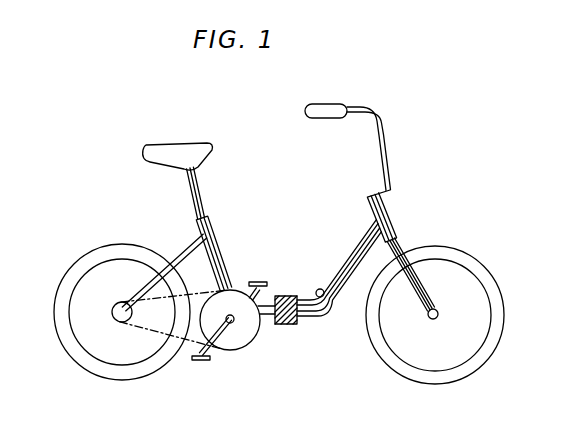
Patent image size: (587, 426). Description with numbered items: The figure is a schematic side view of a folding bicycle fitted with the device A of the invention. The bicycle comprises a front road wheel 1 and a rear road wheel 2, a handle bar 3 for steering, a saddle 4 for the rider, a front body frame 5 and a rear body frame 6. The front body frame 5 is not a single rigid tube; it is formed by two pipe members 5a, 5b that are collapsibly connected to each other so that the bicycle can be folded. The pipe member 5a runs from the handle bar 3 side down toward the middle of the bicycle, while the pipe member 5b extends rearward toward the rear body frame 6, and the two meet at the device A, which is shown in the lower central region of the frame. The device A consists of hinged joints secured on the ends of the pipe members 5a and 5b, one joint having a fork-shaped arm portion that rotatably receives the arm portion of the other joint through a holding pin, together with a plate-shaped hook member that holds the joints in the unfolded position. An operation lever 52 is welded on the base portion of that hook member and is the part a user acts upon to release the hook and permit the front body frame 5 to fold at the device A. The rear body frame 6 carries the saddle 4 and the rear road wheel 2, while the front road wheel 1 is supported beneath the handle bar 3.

The front road wheel 1 is at (481, 267).
The rear road wheel 2 is at (80, 262).
The handle bar 3 is at (384, 140).
The saddle 4 is at (167, 153).
The front body frame 5 is at (353, 248).
The pipe member 5a is at (345, 273).
The pipe member 5b is at (267, 318).
The operation lever 52 is at (313, 309).
The rear body frame 6 is at (220, 245).
The device A is at (287, 296).